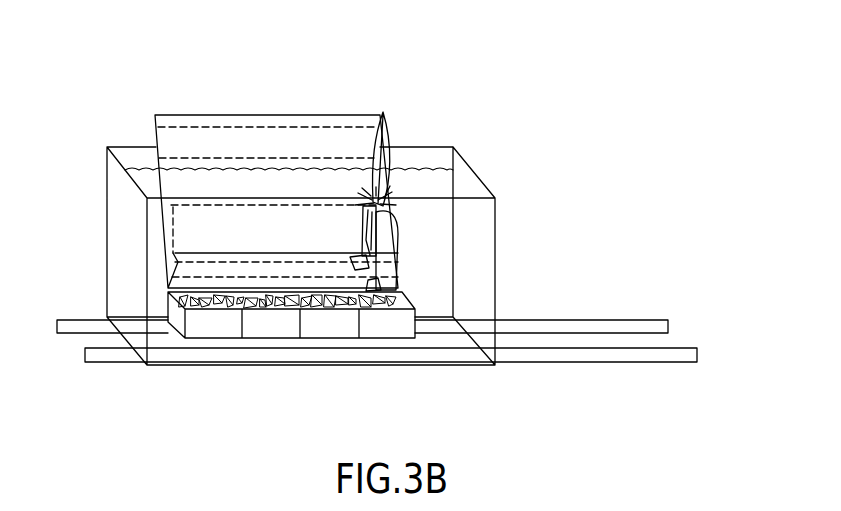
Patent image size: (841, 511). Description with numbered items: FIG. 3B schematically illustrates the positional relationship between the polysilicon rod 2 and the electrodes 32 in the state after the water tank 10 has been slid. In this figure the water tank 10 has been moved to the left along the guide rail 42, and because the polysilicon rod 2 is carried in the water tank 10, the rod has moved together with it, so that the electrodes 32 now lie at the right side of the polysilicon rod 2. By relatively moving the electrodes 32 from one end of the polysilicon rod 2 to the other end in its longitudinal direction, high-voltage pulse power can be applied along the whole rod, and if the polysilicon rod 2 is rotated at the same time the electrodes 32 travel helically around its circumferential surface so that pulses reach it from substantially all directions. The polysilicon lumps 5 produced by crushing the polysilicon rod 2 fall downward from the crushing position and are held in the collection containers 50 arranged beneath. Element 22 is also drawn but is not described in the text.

The water tank 10 is at (107, 205).
The cylindrical container 22 is at (156, 146).
The electrodes 32 is at (384, 111).
The polysilicon rod 2 is at (389, 230).
The polysilicon lumps 5 is at (214, 293).
The collection containers 50 is at (392, 383).
The guide rail 42 is at (576, 349).